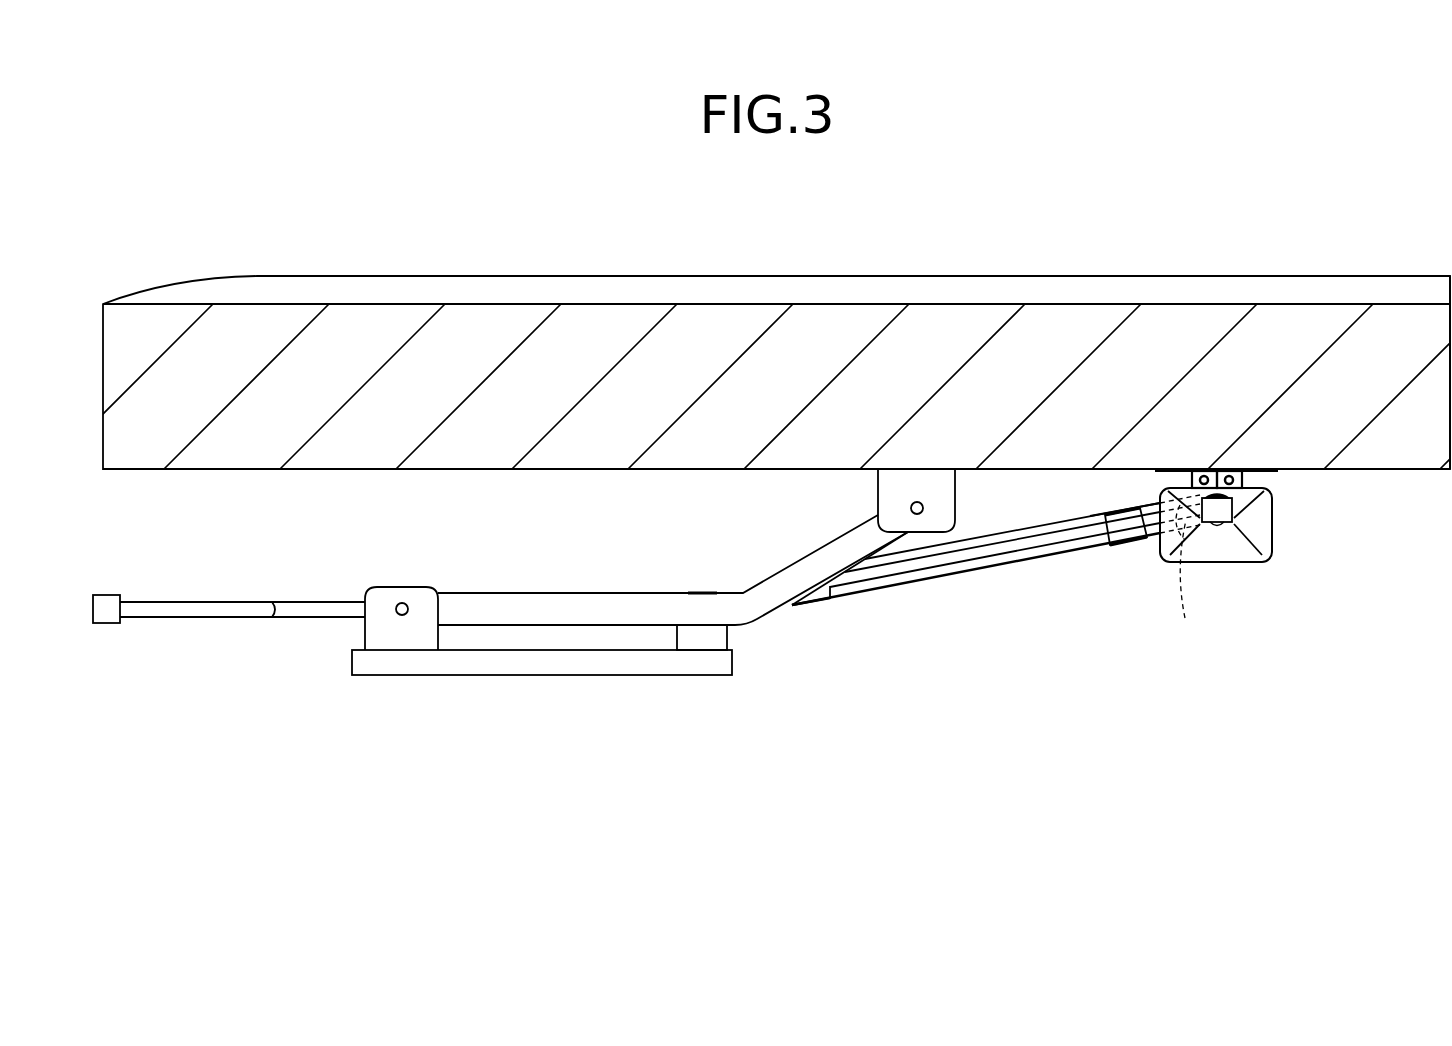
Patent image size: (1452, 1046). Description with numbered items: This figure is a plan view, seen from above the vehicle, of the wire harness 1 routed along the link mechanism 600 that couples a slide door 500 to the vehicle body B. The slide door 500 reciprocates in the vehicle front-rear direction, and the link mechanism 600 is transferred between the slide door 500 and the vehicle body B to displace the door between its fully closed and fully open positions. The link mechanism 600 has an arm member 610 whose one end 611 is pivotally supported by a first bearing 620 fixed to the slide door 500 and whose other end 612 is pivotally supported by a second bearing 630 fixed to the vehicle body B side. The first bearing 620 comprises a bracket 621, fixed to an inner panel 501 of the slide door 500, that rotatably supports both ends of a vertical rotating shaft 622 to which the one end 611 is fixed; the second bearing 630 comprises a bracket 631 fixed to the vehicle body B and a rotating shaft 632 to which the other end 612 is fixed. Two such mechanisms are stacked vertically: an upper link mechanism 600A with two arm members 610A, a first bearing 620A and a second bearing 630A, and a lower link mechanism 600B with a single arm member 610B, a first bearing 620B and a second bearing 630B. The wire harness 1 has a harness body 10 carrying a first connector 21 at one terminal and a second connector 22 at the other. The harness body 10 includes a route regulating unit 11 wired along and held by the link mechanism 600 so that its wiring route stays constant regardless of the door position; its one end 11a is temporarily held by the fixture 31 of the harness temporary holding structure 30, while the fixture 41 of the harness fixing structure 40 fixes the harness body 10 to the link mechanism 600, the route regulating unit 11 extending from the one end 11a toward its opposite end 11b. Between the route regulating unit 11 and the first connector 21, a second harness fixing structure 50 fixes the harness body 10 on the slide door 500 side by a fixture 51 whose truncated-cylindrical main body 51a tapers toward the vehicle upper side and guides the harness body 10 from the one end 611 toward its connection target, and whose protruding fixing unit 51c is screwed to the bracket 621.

The wire harness 1 is at (725, 640).
The harness body 10 is at (222, 565).
The second connector 22 is at (105, 595).
The vehicle body B is at (530, 676).
The second bearing 630 is at (479, 645).
The second bearing of upper link mechanism 630A is at (335, 597).
The second bearing of lower link mechanism 630B is at (660, 640).
The bracket 631 is at (526, 640).
The rotating shaft 632 is at (402, 603).
The link mechanism 600 is at (825, 646).
The upper link mechanism 600A is at (825, 564).
The lower link mechanism 600B is at (976, 643).
The arm member 610 is at (825, 633).
The arm member of upper link mechanism 610A is at (825, 564).
The arm member of lower link mechanism 610B is at (1014, 594).
The one end of arm member 611 is at (877, 517).
The other end of arm member 612 is at (455, 592).
The route regulating unit 11 is at (976, 594).
The one end of route regulating unit 11a is at (1098, 540).
The shaft proximal end 11b is at (823, 597).
The harness fixing structure 40 is at (836, 608).
The fixture 41 is at (834, 665).
The harness temporary holding structure 30 is at (1132, 602).
The fixture 31 is at (1132, 602).
The second harness fixing structure 50 is at (1225, 577).
The fixture 51 is at (1225, 577).
The main body 51a is at (1265, 545).
The fixing unit 51c is at (1190, 480).
The first connector 21 is at (1217, 515).
The first bearing 620 is at (1115, 379).
The first bearing of upper link mechanism 620A is at (1103, 353).
The first bearing of lower link mechanism 620B is at (1262, 512).
The bracket 621 is at (940, 483).
The rotating shaft 622 is at (917, 500).
The slide door 500 is at (750, 381).
The inner panel 501 is at (1412, 470).